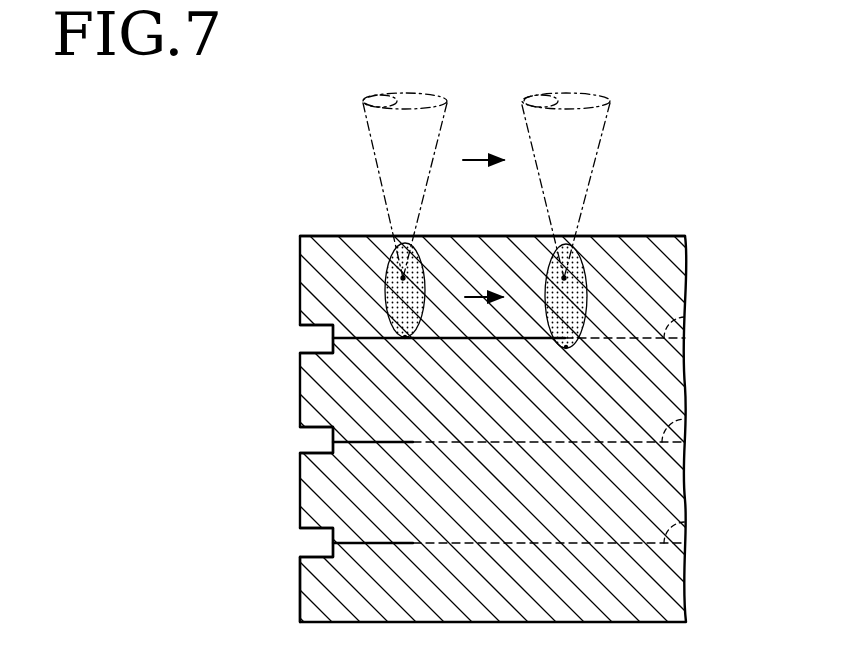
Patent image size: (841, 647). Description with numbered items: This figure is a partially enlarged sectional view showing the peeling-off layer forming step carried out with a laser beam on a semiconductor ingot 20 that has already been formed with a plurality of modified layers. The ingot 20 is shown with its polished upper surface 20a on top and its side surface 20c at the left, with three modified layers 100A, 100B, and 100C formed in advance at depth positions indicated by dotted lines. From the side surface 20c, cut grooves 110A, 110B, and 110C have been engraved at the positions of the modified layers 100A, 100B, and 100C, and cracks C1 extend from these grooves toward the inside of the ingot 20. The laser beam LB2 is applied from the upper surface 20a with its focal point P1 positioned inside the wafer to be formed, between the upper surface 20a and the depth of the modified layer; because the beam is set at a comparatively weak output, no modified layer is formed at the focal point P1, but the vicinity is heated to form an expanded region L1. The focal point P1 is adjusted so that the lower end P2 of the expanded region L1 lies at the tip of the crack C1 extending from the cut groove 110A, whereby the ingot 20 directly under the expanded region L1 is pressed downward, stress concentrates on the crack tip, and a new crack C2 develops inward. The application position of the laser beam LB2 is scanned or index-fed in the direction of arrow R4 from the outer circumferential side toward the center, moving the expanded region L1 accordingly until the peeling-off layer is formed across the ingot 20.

The semiconductor ingot 20 is at (294, 256).
The upper surface 20a is at (323, 236).
The side surface 20c is at (300, 600).
The cut groove 110A is at (329, 347).
The cut groove 110B is at (329, 447).
The cut groove 110C is at (329, 545).
The crack C1 is at (363, 337).
The new crack C2 is at (484, 338).
The modified layer 100A is at (687, 317).
The modified layer 100B is at (687, 419).
The modified layer 100C is at (687, 522).
The laser beam LB2 is at (372, 143).
The expanded region L1 is at (412, 270).
The focal point P1 is at (403, 278).
The lower end P2 is at (405, 337).
The arrow R4 is at (487, 156).